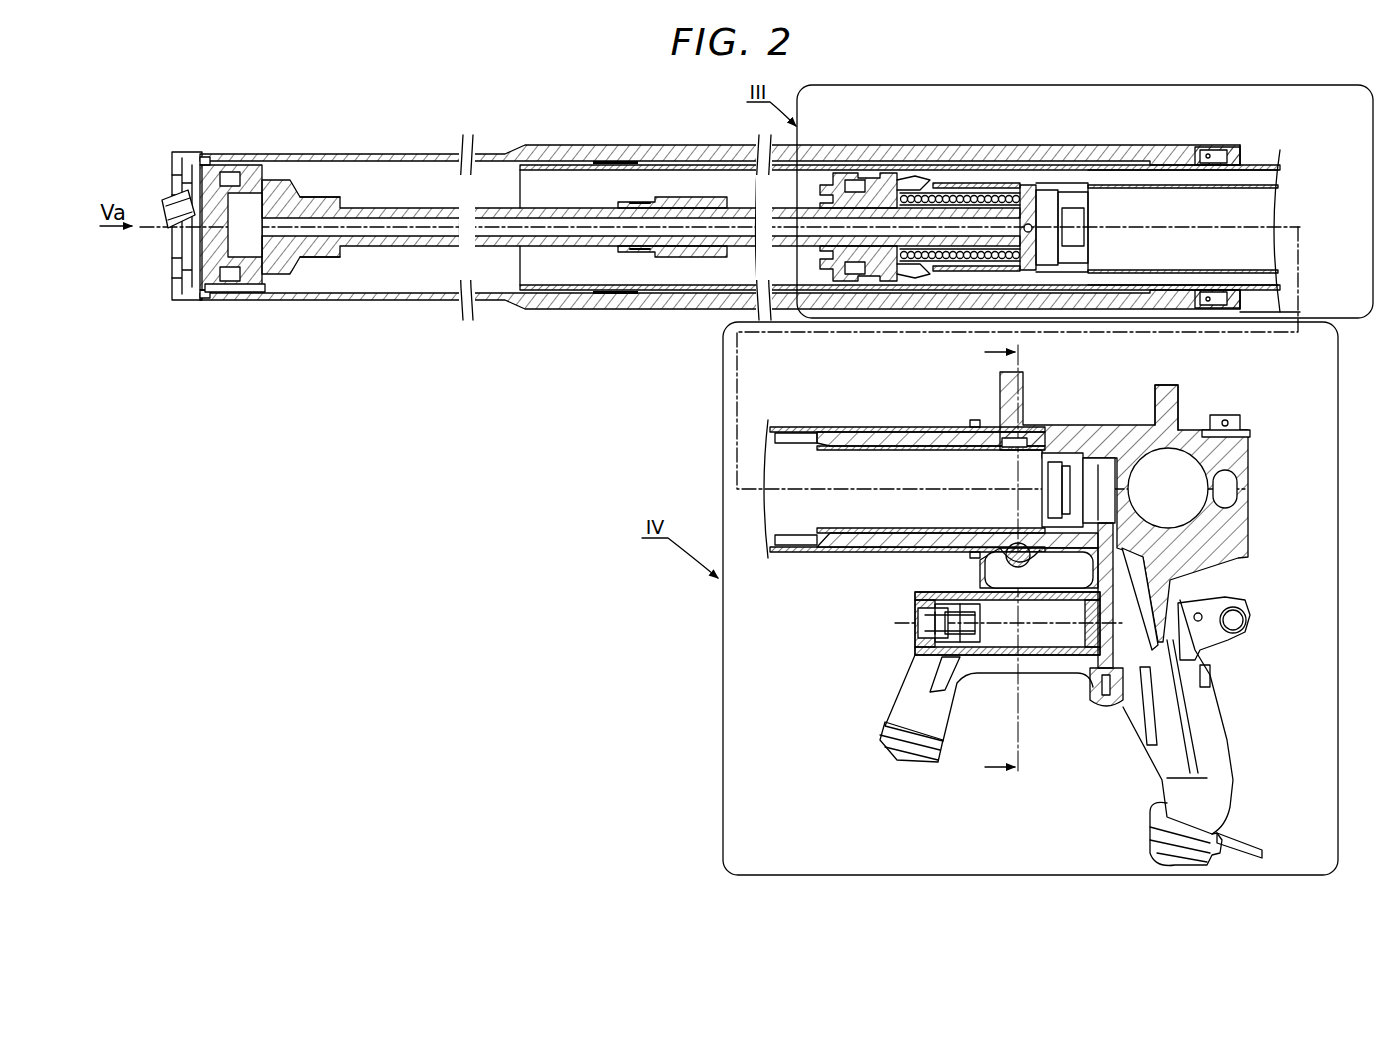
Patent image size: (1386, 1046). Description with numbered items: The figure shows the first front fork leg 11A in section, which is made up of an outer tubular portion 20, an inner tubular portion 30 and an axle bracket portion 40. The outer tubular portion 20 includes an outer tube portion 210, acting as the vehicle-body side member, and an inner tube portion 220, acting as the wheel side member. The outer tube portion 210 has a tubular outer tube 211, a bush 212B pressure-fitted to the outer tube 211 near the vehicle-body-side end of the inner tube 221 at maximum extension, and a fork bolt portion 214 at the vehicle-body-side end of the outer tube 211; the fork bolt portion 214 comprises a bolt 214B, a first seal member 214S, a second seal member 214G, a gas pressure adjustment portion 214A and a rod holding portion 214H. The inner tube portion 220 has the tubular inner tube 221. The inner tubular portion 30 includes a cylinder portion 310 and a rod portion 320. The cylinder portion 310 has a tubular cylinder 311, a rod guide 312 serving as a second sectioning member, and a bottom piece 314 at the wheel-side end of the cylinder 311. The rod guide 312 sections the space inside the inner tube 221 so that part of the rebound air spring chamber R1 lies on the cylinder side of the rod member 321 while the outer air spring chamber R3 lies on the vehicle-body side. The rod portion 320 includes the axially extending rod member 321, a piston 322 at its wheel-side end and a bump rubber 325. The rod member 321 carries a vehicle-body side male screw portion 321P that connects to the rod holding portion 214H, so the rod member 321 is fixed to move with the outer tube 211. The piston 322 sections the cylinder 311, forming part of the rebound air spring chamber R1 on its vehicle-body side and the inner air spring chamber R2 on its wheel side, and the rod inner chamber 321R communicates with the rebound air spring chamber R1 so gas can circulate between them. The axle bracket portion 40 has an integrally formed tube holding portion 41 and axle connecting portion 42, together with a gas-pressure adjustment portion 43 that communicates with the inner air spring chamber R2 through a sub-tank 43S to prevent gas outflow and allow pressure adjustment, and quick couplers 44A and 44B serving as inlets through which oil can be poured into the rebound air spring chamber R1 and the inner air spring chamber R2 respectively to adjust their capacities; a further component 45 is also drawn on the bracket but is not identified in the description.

The outer tubular portion 20 is at (676, 140).
The fork bolt portion 214 is at (196, 135).
The gas pressure adjustment portion 214A is at (158, 180).
The first seal member 214S is at (205, 155).
The second seal member 214G is at (262, 175).
The bolt 214B is at (208, 292).
The rod holding portion 214H is at (305, 270).
The rod portion 320 is at (541, 195).
The vehicle-body side male screw portion 321P is at (378, 205).
The outer air spring chamber R3 is at (344, 180).
The inner tubular portion 30 is at (410, 180).
The rod member 321 is at (500, 200).
The rod inner chamber 321R is at (500, 247).
The bush 212B is at (612, 162).
The bump rubber 325 is at (703, 258).
The outer tube 211 is at (660, 308).
The outer tube portion 210 is at (585, 318).
The rod guide 312 is at (818, 182).
The rebound air spring chamber R1 is at (1142, 177).
The piston 322 is at (1117, 205).
The cylinder portion 310 is at (1245, 170).
The inner tube portion 220 is at (1267, 148).
The cylinder 311 is at (1275, 184).
The inner air spring chamber R2 is at (1258, 210).
The inner tube 221 is at (1275, 312).
The first front fork leg 11A is at (535, 498).
The axle bracket portion 40 is at (1267, 452).
The tube holding portion 41 is at (972, 400).
The axle connecting portion 42 is at (1197, 408).
The bolt 45 is at (1237, 418).
The bottom piece 314 is at (1065, 455).
The quick coupler 44A is at (1005, 558).
The quick coupler 44B is at (1102, 705).
The sub-tank 43S is at (1060, 640).
The gas-pressure adjustment portion 43 is at (915, 628).